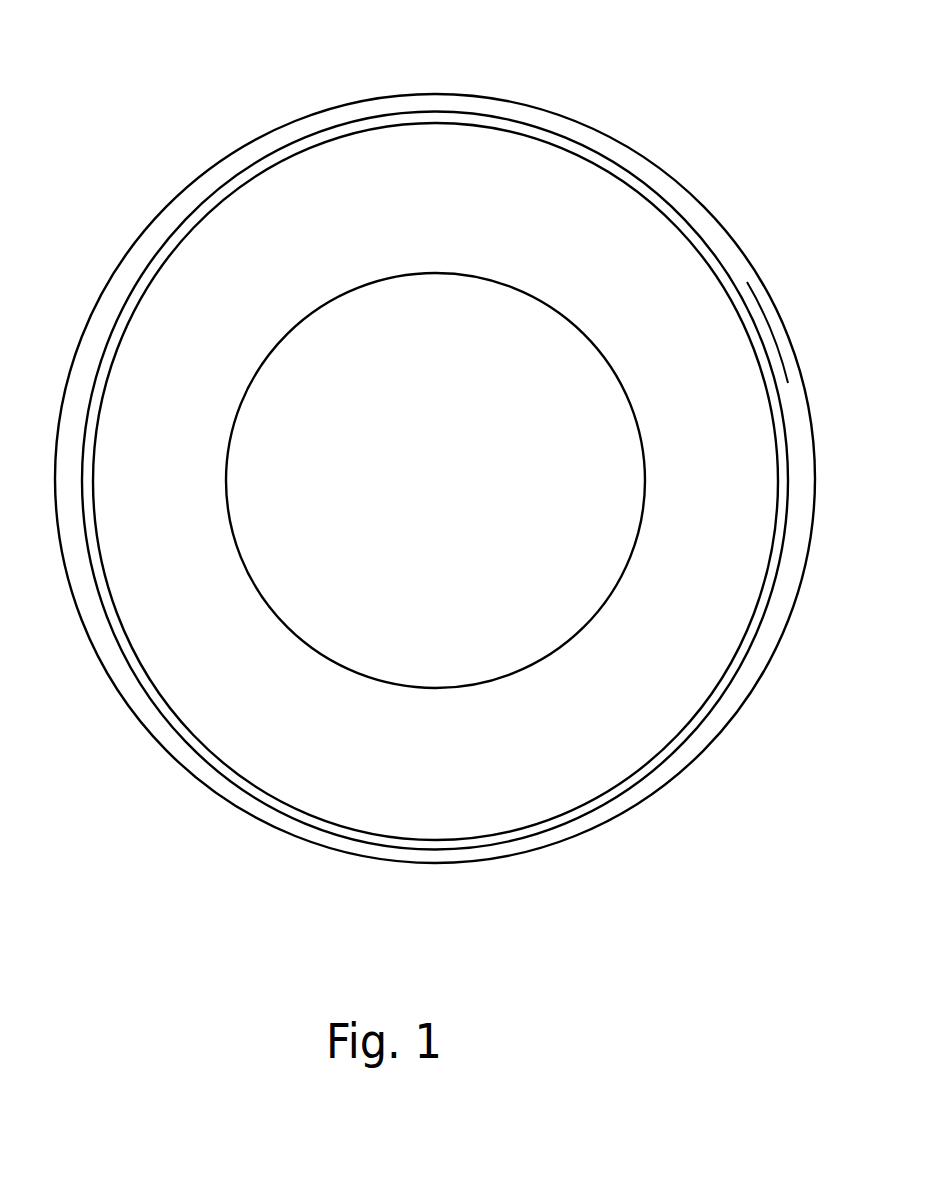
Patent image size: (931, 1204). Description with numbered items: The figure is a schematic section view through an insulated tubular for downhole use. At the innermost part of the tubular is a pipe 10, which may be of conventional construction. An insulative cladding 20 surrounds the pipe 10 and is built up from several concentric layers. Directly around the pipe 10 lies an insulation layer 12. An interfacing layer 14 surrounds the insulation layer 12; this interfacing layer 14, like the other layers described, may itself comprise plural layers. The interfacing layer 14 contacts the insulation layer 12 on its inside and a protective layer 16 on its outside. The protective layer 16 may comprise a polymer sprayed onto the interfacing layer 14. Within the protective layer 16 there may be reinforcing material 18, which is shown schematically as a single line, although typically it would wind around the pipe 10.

The pipe 10 is at (294, 330).
The insulation layer 12 is at (398, 168).
The interfacing layer 14 is at (520, 127).
The protective layer 16 is at (665, 177).
The reinforcing material 18 is at (767, 315).
The insulative cladding 20 is at (680, 820).